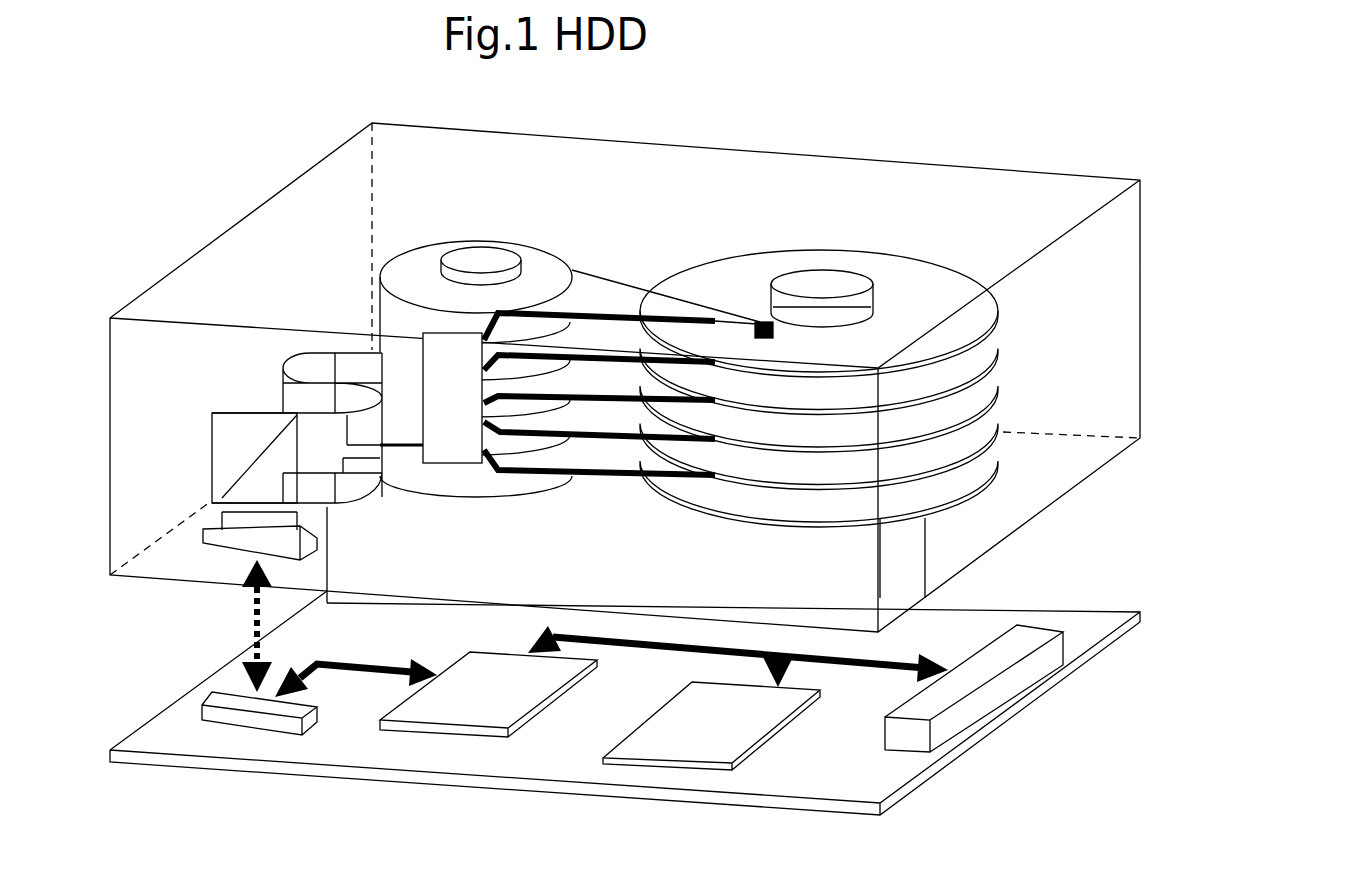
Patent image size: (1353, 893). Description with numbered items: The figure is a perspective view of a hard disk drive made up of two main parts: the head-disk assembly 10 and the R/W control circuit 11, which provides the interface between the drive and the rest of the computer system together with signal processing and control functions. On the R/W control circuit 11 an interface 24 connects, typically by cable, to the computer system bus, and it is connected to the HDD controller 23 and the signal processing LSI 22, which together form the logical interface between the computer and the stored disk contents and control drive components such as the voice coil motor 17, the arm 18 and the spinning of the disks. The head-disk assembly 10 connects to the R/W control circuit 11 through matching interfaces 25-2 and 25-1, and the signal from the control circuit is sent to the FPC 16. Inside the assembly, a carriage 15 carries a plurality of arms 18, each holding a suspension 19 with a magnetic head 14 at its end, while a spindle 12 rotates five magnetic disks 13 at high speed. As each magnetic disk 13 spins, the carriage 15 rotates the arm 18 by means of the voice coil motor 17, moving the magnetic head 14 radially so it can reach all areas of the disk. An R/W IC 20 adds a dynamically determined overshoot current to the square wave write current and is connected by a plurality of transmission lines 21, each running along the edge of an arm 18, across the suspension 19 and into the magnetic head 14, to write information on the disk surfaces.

The head-disk assembly 10 is at (1020, 544).
The R/W control circuit 11 is at (847, 863).
The spindle 12 is at (852, 266).
The magnetic disk 13 is at (963, 240).
The magnetic head 14 is at (760, 300).
The carriage 15 is at (458, 250).
The FPC 16 is at (365, 493).
The voice coil motor 17 is at (390, 262).
The arm 18 is at (605, 278).
The suspension 19 is at (716, 294).
The R/W IC 20 is at (464, 464).
The transmission line 21 is at (617, 500).
The signal processing LSI 22 is at (430, 744).
The HDD controller 23 is at (659, 776).
The interface 24 is at (1016, 707).
The interface 25-1 is at (195, 550).
The interface 25-2 is at (228, 712).